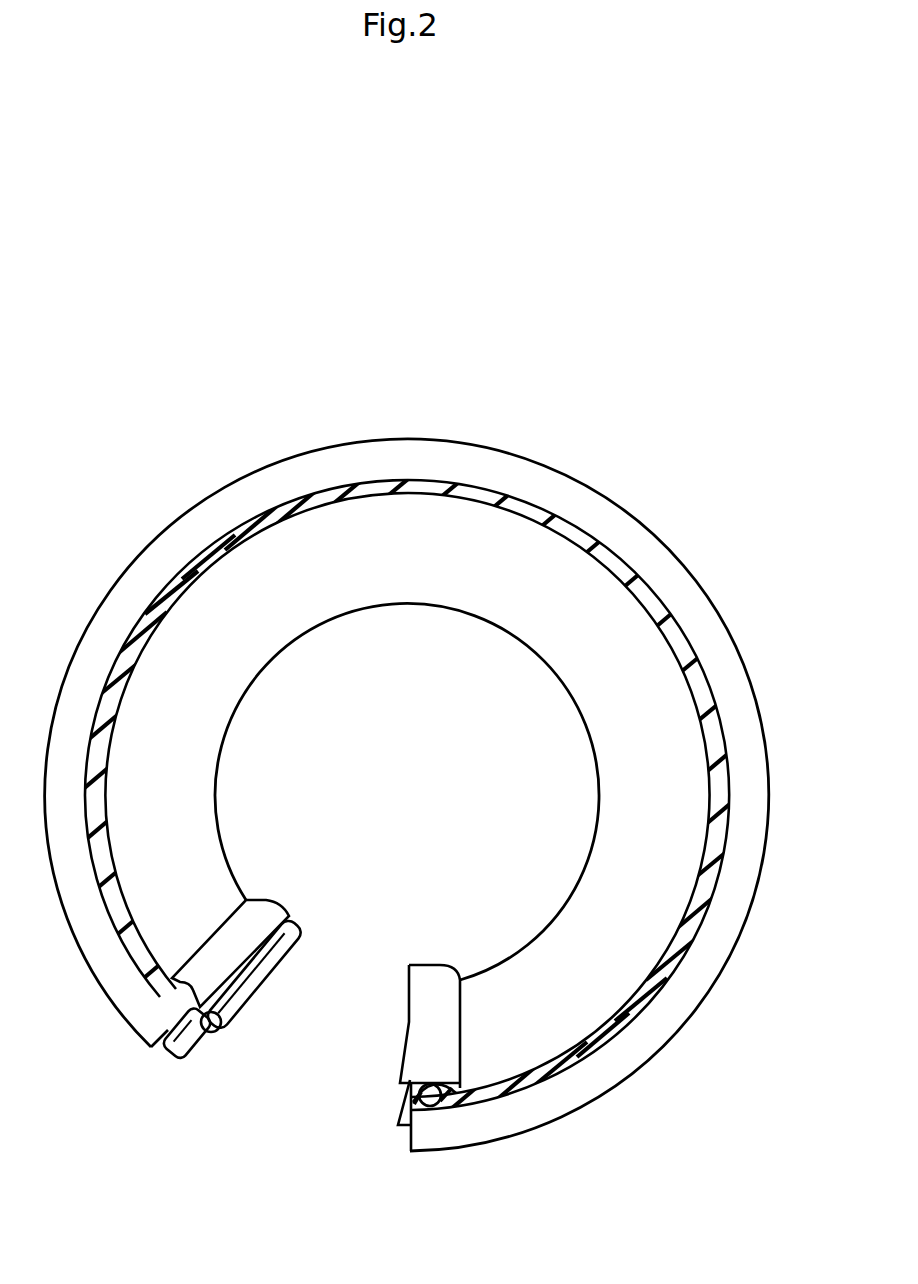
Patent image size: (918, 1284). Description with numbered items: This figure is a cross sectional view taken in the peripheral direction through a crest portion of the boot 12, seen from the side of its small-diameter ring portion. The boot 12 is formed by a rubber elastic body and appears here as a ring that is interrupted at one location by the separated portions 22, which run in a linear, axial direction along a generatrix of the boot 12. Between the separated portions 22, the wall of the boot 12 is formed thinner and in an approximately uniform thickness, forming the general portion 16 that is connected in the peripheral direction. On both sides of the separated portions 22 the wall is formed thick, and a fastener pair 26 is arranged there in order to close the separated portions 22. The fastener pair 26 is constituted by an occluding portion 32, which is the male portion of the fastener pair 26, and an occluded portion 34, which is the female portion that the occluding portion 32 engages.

The boot 12 is at (683, 531).
The general portion 16 is at (540, 628).
The separated portions 22 is at (336, 997).
The fastener pair 26 is at (311, 1059).
The occluding portion 32 is at (216, 1032).
The occluded portion 34 is at (398, 1088).